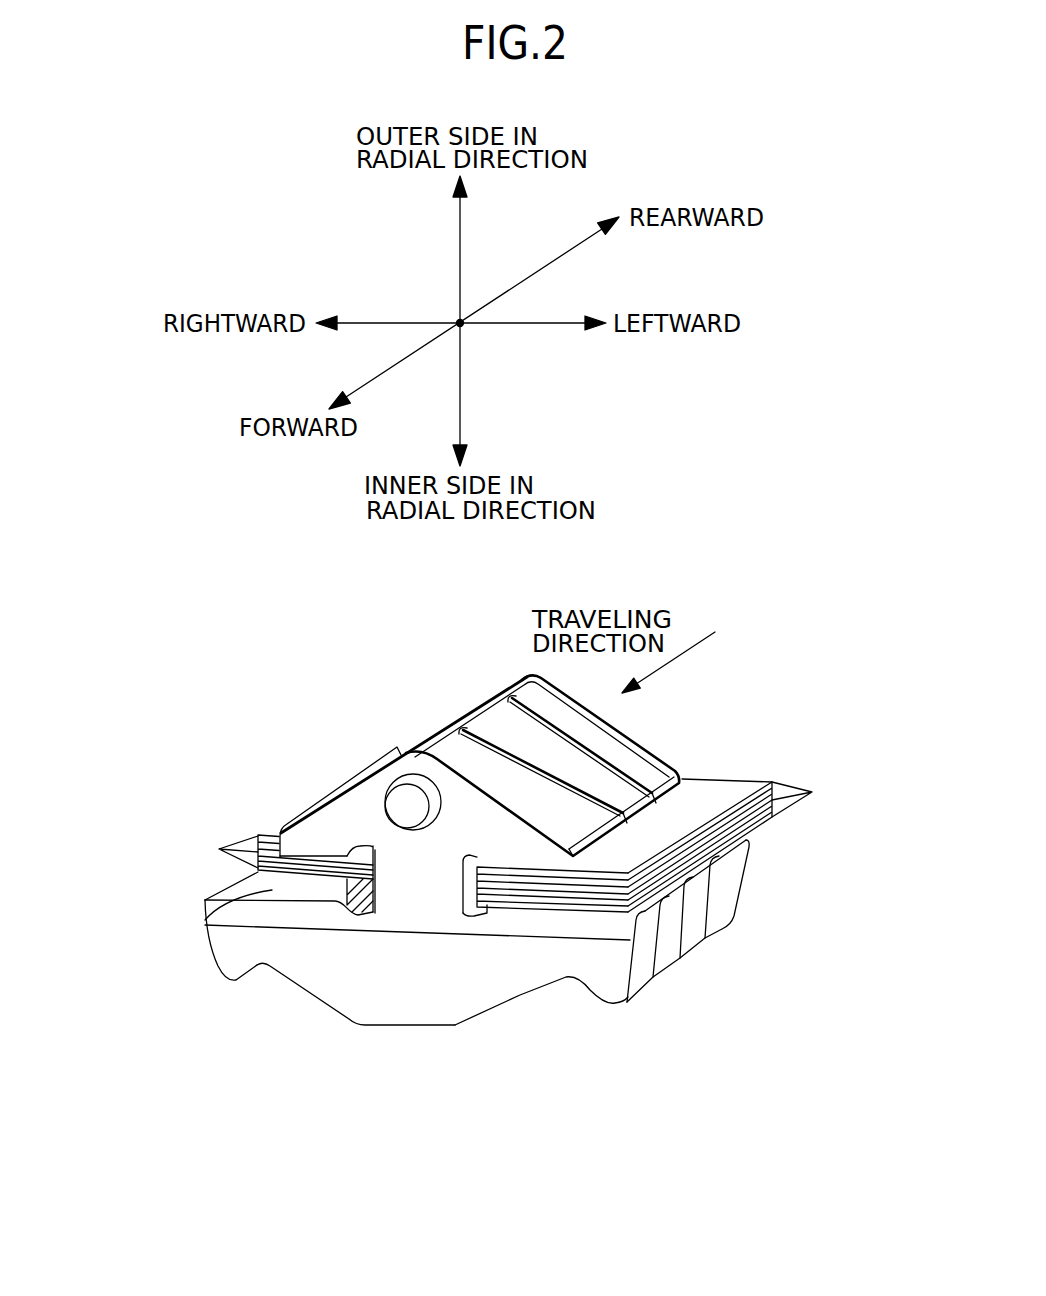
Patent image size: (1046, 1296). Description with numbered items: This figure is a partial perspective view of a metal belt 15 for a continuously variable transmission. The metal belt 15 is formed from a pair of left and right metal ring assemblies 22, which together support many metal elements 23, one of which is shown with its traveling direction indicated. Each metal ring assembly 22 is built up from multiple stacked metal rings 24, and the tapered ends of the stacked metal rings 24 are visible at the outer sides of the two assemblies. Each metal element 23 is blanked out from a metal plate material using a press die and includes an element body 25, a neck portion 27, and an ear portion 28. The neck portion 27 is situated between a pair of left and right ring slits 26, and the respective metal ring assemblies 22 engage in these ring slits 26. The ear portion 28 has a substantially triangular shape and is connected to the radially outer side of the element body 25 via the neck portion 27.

The metal belt 15 is at (452, 684).
The metal ring assembly 22 is at (277, 815).
The metal element 23 is at (518, 1022).
The metal ring 24 is at (513, 825).
The element body 25 is at (390, 957).
The ring slit 26 is at (262, 866).
The neck portion 27 is at (425, 898).
The ear portion 28 is at (362, 803).